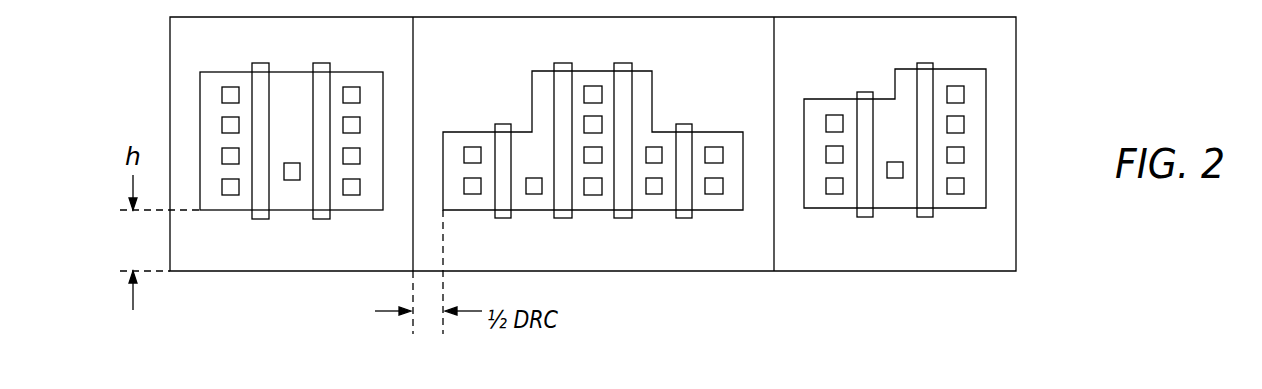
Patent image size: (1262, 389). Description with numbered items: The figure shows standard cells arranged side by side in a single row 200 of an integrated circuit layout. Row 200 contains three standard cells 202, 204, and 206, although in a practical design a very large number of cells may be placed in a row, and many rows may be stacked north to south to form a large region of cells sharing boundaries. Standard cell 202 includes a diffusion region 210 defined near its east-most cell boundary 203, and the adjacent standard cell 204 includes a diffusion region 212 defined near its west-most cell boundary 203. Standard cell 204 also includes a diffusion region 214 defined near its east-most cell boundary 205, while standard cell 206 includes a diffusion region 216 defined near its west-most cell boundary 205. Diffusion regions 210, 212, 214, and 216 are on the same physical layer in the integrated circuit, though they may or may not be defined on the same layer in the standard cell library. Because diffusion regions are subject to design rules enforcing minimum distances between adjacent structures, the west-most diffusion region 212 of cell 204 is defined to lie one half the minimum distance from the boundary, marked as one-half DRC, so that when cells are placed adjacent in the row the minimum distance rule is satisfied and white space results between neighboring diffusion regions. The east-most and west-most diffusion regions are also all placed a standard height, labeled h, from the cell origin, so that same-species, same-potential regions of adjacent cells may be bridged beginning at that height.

The row 200 is at (651, 179).
The standard cell 202 is at (217, 271).
The cell boundary 203 is at (413, 30).
The standard cell 204 is at (687, 271).
The cell boundary 205 is at (774, 50).
The standard cell 206 is at (918, 271).
The diffusion region 210 is at (367, 212).
The diffusion region 212 is at (457, 130).
The diffusion region 214 is at (725, 129).
The diffusion region 216 is at (818, 98).